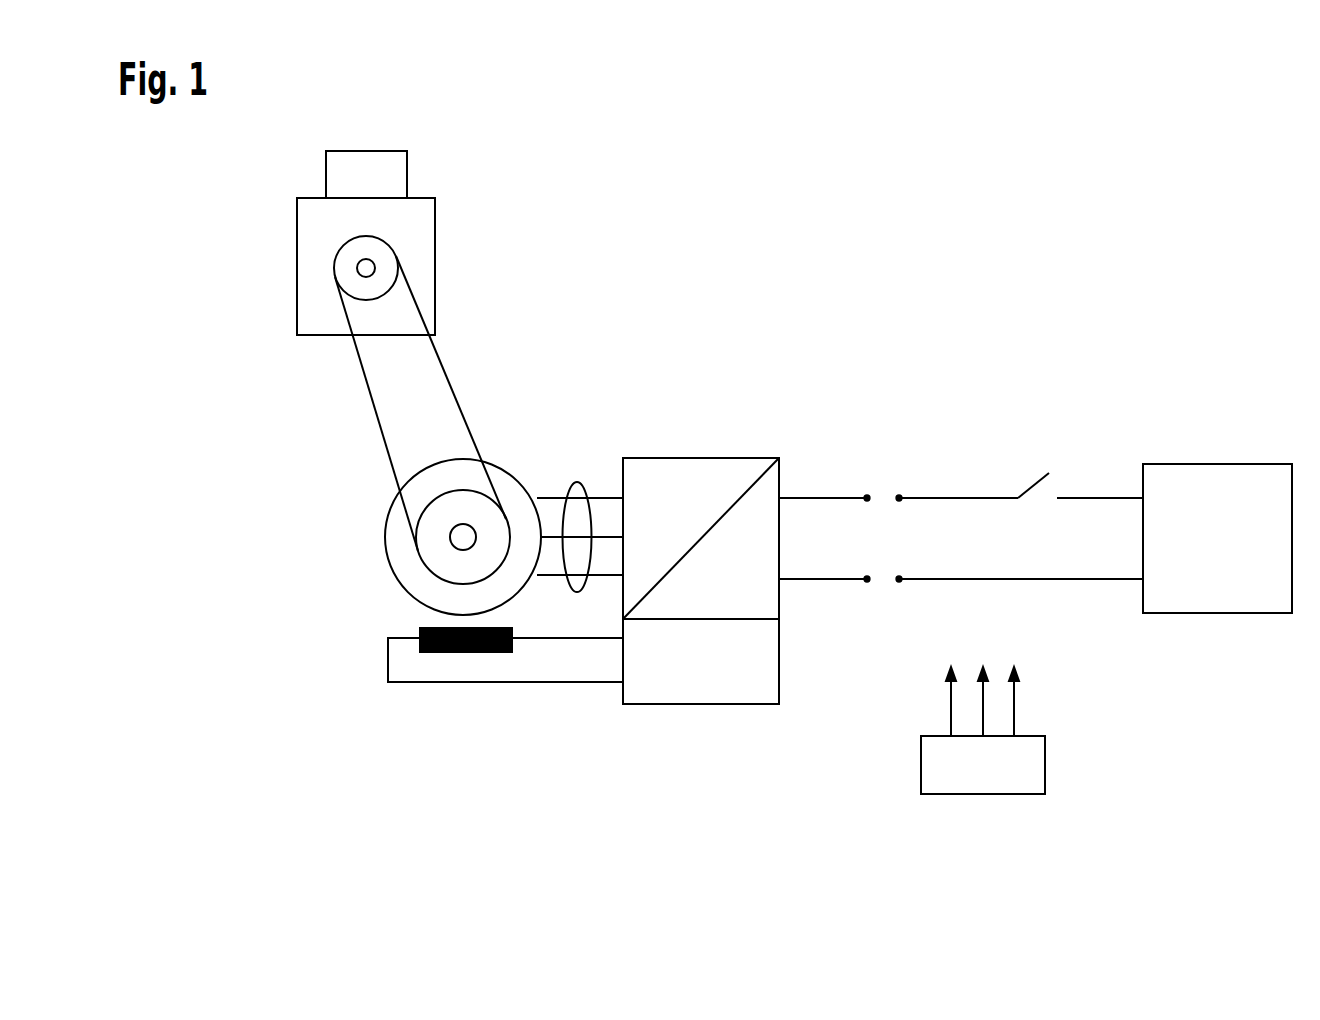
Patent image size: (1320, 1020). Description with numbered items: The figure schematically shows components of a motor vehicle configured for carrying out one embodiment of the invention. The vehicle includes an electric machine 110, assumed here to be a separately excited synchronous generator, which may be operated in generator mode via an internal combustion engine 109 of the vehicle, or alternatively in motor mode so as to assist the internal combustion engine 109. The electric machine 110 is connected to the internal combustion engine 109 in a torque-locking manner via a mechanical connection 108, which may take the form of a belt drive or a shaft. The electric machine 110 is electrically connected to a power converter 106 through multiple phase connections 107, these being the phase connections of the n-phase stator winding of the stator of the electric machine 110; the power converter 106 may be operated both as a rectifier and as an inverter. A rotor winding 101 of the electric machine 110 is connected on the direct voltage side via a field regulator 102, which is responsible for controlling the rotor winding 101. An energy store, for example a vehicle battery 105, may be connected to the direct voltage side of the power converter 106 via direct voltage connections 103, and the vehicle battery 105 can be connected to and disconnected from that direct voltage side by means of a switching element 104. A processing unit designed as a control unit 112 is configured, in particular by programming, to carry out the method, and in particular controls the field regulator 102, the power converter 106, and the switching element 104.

The rotor winding 101 is at (420, 630).
The field regulator 102 is at (709, 705).
The direct voltage connections 103 is at (867, 494).
The switching element 104 is at (1030, 490).
The vehicle battery 105 is at (1215, 476).
The power converter 106 is at (700, 474).
The phase connections 107 is at (577, 480).
The mechanical connection 108 is at (388, 449).
The internal combustion engine 109 is at (418, 244).
The electric machine 110 is at (400, 545).
The control unit 112 is at (928, 764).